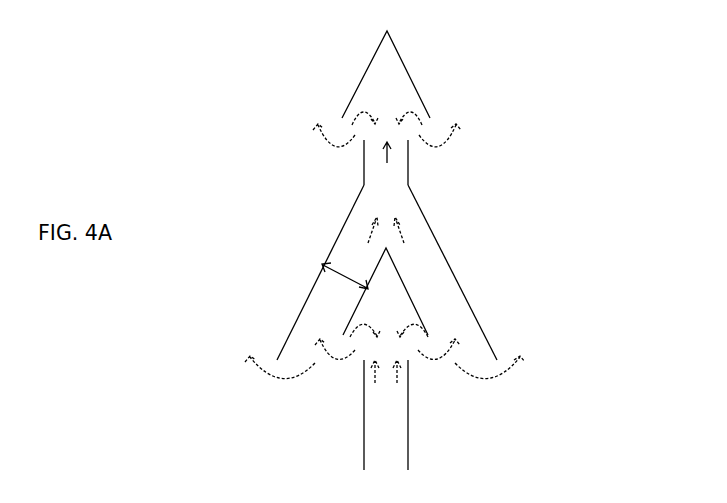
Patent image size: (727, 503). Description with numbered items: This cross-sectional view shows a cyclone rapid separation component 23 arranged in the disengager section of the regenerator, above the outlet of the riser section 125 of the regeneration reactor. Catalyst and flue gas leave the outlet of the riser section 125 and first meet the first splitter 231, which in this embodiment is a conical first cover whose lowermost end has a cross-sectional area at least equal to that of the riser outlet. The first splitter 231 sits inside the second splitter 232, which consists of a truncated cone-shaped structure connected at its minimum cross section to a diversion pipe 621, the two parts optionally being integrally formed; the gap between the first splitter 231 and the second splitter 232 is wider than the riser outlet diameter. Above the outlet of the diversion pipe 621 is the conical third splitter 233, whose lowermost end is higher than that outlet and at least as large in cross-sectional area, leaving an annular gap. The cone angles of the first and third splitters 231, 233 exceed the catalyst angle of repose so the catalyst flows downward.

The cyclone rapid separation component 23 is at (506, 125).
The third splitter 233 is at (403, 63).
The second splitter 232 is at (430, 222).
The first splitter 231 is at (422, 322).
The diversion pipe 621 is at (363, 163).
The riser section 125 is at (397, 417).